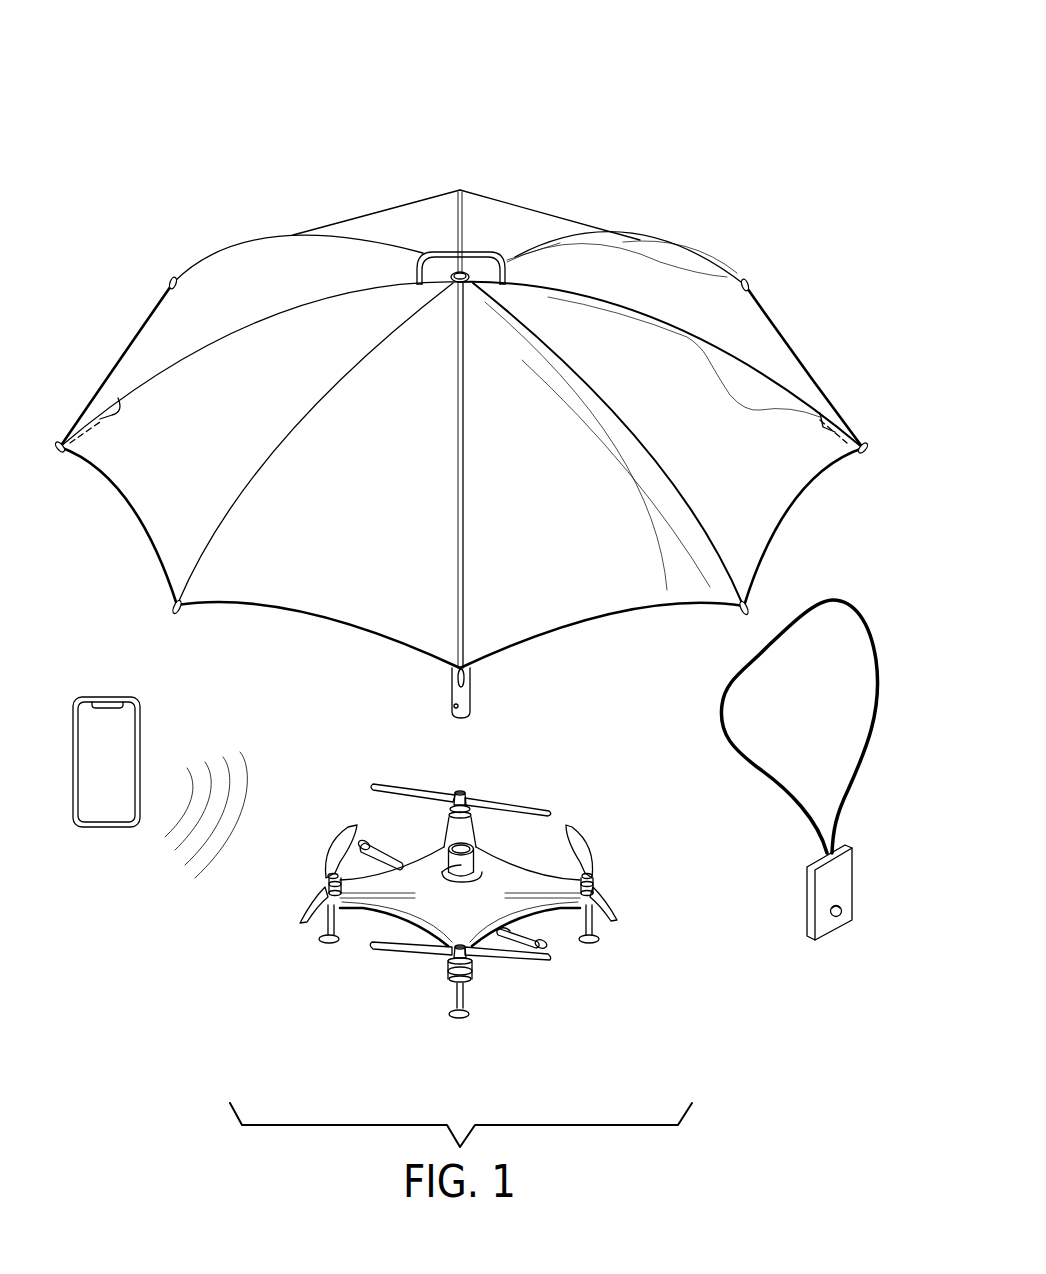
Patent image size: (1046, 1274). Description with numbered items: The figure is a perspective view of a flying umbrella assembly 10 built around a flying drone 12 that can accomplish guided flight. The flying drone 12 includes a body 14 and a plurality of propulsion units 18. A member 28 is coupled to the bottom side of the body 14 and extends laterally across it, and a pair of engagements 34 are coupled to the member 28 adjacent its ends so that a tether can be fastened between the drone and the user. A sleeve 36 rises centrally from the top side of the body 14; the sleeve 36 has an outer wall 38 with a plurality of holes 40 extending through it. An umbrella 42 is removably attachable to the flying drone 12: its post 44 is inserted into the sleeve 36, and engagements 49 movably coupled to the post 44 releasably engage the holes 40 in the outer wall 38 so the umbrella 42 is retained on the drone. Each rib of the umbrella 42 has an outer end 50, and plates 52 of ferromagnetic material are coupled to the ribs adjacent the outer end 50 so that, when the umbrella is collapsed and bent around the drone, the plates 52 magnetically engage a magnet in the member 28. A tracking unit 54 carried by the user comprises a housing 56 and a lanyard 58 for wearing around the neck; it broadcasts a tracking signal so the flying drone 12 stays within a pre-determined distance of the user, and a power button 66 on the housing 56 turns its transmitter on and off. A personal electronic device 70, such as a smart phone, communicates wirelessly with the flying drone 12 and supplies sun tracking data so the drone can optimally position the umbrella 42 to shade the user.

The flying umbrella assembly 10 is at (795, 123).
The flying drone 12 is at (545, 976).
The body 14 is at (513, 880).
The propulsion units 18 is at (468, 796).
The member 28 is at (498, 932).
The engagements 34 is at (364, 838).
The sleeve 36 is at (447, 848).
The outer wall 38 is at (450, 866).
The holes 40 is at (446, 862).
The umbrella 42 is at (405, 162).
The post 44 is at (452, 686).
The engagements 49 is at (455, 705).
The outer end 50 is at (60, 455).
The plates 52 is at (118, 400).
The tracking unit 54 is at (890, 840).
The housing 56 is at (806, 919).
The lanyard 58 is at (873, 634).
The power button 66 is at (838, 918).
The personal electronic device 70 is at (98, 698).